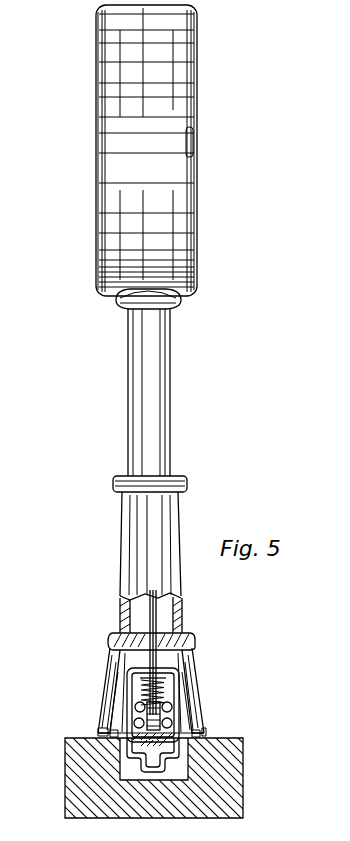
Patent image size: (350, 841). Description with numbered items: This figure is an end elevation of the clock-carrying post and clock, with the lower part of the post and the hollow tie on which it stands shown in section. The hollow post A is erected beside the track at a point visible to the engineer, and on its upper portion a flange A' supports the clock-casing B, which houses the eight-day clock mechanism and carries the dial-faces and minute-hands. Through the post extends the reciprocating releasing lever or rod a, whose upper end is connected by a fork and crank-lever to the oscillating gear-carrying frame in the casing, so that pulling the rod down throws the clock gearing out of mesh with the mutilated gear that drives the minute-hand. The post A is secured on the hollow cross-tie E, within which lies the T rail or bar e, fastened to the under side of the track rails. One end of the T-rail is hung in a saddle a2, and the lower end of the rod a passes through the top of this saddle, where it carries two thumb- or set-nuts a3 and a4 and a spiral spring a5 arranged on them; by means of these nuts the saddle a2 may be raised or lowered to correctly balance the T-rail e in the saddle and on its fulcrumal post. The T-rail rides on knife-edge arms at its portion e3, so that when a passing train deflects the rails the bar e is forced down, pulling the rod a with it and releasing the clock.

The clock-casing B is at (146, 150).
The flange A' is at (159, 309).
The hollow post A is at (163, 392).
The reciprocating releasing lever or rod a is at (150, 654).
The saddle a2 is at (132, 688).
The set-nut a3 is at (168, 708).
The set-nut a4 is at (168, 723).
The spiral spring a5 is at (172, 680).
The T rail or bar e is at (124, 722).
The portion of the T rail e3 is at (150, 751).
The hollow cross-tie E is at (240, 763).